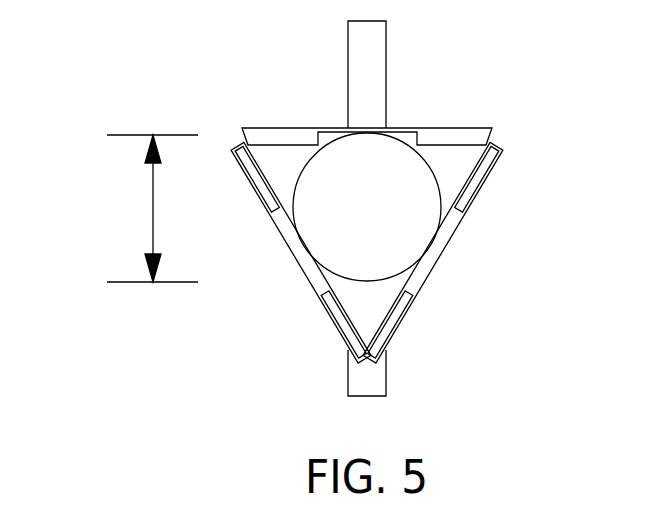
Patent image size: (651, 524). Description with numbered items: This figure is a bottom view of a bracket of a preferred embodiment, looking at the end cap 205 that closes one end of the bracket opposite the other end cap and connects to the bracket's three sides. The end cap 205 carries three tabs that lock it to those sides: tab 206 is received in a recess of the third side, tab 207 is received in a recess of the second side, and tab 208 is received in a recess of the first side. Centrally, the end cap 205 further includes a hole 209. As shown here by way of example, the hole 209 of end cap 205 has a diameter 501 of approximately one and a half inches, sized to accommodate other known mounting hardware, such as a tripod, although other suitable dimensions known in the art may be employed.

The end cap 205 is at (447, 170).
The tab 206 is at (440, 255).
The tab 207 is at (293, 255).
The tab 208 is at (330, 128).
The hole 209 is at (362, 282).
The diameter 501 is at (152, 208).